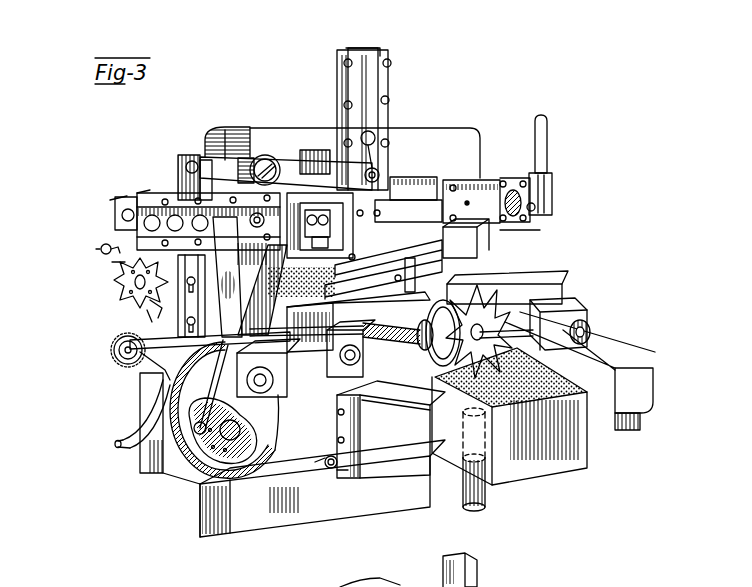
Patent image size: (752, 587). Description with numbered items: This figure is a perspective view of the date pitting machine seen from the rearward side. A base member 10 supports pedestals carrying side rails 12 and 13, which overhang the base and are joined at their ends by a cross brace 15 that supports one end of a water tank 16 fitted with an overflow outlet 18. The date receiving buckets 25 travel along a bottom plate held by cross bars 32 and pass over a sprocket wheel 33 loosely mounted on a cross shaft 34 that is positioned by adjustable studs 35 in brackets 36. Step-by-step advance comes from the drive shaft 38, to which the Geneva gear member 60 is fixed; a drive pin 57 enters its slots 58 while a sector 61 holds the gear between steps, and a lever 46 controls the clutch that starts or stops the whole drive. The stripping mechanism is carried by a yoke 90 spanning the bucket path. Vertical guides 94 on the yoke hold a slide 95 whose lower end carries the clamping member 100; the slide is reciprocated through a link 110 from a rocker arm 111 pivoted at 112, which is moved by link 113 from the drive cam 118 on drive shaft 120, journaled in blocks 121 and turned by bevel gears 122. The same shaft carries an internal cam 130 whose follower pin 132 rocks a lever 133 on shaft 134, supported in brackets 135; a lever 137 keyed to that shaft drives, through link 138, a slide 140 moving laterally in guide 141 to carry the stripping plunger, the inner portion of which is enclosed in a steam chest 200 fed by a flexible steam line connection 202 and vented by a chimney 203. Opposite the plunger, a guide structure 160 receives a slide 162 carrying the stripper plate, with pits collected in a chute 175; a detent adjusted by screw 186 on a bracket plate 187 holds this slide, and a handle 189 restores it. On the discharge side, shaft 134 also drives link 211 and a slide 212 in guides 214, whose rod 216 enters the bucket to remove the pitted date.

The base member 10 is at (248, 528).
The side rail 12 is at (654, 386).
The side rail 13 is at (418, 438).
The cross brace 15 is at (352, 474).
The water tank 16 is at (590, 458).
The overflow outlet 18 is at (497, 505).
The date receiving buckets 25 is at (484, 260).
The cross bars 32 is at (547, 288).
The sprocket wheel 33 is at (454, 368).
The cross shaft 34 is at (562, 306).
The adjustable studs 35 is at (590, 333).
The brackets 36 is at (428, 355).
The drive shaft 38 is at (128, 273).
The lever 46 is at (333, 470).
The drive pin 57 is at (103, 247).
The slots 58 is at (128, 306).
The Geneva gear member 60 is at (124, 293).
The sector 61 is at (110, 262).
The yoke 90 is at (456, 138).
The guides 94 is at (347, 80).
The slide 95 is at (366, 57).
The clamping member 100 is at (378, 186).
The link 110 is at (374, 160).
The rocker arm 111 is at (281, 162).
The pivot 112 is at (252, 150).
The link 113 is at (180, 197).
The drive cam 118 is at (140, 447).
The drive shaft 120 is at (138, 370).
The blocks 121 is at (113, 351).
The bevel gears 122 is at (111, 340).
The internal cam 130 is at (197, 478).
The follower pin 132 is at (187, 471).
The lever 133 is at (145, 460).
The shaft 134 is at (285, 394).
The brackets 135 is at (272, 374).
The lever 137 is at (236, 287).
The link 138 is at (213, 197).
The slide 140 is at (115, 207).
The guide 141 is at (163, 197).
The guide structure 160 is at (480, 178).
The slide 162 is at (428, 200).
The chute 175 is at (462, 243).
The screw 186 is at (535, 208).
The bracket plate 187 is at (535, 231).
The handle 189 is at (548, 124).
The steam chest 200 is at (253, 110).
The flexible steam line connection 202 is at (118, 441).
The chimney 203 is at (313, 135).
The link 211 is at (372, 575).
The slide 212 is at (110, 200).
The guides 214 is at (137, 193).
The rod 216 is at (350, 586).